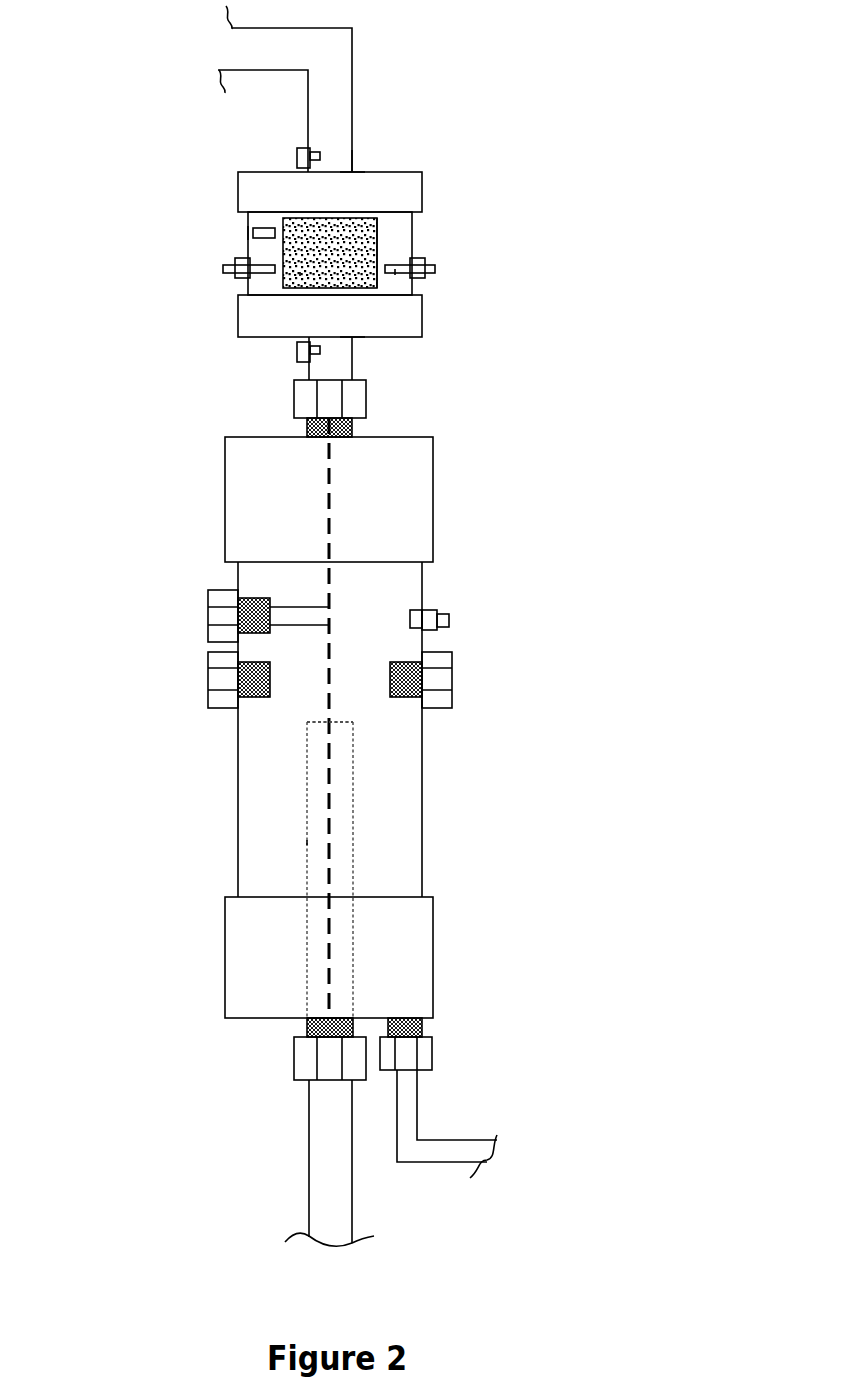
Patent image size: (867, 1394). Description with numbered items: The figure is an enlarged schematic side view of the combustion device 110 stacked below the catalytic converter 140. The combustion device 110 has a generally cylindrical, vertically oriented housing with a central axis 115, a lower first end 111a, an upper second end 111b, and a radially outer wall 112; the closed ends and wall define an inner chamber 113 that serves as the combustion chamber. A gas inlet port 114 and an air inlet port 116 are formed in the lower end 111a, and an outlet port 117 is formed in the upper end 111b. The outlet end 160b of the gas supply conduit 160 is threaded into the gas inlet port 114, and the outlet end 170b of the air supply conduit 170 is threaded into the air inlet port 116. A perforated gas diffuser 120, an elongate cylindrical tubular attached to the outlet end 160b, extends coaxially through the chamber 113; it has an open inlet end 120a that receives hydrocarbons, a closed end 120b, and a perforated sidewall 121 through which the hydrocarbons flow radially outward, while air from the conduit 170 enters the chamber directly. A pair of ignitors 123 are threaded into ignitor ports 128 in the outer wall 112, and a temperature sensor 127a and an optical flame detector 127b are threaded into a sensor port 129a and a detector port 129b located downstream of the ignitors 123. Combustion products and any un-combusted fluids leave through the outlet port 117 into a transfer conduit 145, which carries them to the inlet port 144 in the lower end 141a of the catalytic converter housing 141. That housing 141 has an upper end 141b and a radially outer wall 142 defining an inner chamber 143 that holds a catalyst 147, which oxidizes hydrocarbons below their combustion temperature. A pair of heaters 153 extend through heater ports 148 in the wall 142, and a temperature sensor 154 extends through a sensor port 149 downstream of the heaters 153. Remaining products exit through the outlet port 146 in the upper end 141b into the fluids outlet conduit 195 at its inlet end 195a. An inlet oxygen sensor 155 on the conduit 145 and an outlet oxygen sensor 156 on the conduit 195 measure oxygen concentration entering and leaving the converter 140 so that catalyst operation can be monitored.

The combustion device 110 is at (406, 731).
The first end 111a is at (225, 1012).
The second end 111b is at (435, 450).
The radially outer wall 112 is at (416, 708).
The inner chamber 113 is at (400, 585).
The gas inlet port 114 is at (305, 1023).
The central axis 115 is at (333, 517).
The air inlet port 116 is at (425, 1020).
The outlet port 117 is at (307, 428).
The perforated gas diffuser 120 is at (424, 870).
The inlet end 120a is at (353, 1009).
The closed end 120b is at (353, 740).
The perforated sidewall 121 is at (307, 840).
The ignitors 123 is at (322, 722).
The temperature sensor 127a is at (295, 614).
The optical flame detector 127b is at (437, 621).
The ignitor port 128 is at (425, 703).
The sensor port 129a is at (237, 597).
The detector port 129b is at (428, 607).
The catalytic converter 140 is at (370, 257).
The housing 141 is at (418, 249).
The radially outer wall 142 is at (412, 218).
The first end 141a is at (238, 315).
The second end 141b is at (238, 183).
The inner chamber 143 is at (392, 222).
The inlet port 144 is at (352, 342).
The transfer conduit 145 is at (310, 368).
The outlet port 146 is at (352, 170).
The catalyst 147 is at (375, 250).
The heater port 148 is at (425, 278).
The sensor port 149 is at (243, 236).
The heaters 153 is at (395, 272).
The temperature sensor 154 is at (258, 229).
The inlet oxygen sensor 155 is at (297, 348).
The outlet oxygen sensor 156 is at (297, 155).
The gas supply conduit 160 is at (290, 1141).
The outlet end 160b is at (307, 1070).
The air supply conduit 170 is at (458, 1148).
The outlet end 170b is at (408, 1057).
The fluids outlet conduit 195 is at (335, 62).
The inlet end 195a is at (343, 158).